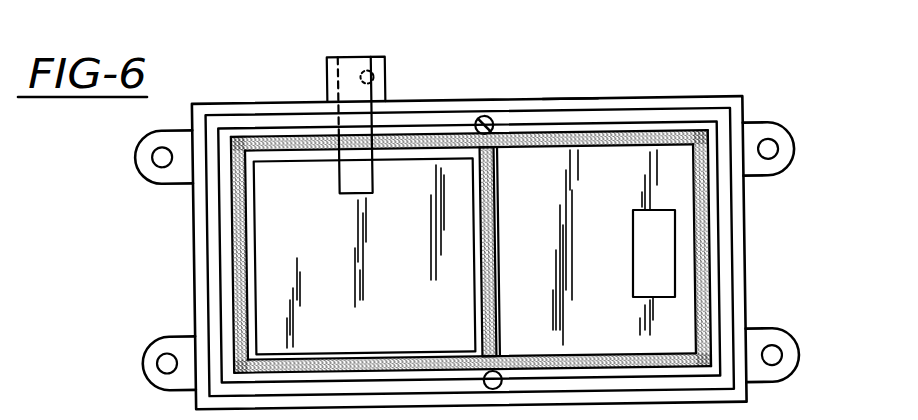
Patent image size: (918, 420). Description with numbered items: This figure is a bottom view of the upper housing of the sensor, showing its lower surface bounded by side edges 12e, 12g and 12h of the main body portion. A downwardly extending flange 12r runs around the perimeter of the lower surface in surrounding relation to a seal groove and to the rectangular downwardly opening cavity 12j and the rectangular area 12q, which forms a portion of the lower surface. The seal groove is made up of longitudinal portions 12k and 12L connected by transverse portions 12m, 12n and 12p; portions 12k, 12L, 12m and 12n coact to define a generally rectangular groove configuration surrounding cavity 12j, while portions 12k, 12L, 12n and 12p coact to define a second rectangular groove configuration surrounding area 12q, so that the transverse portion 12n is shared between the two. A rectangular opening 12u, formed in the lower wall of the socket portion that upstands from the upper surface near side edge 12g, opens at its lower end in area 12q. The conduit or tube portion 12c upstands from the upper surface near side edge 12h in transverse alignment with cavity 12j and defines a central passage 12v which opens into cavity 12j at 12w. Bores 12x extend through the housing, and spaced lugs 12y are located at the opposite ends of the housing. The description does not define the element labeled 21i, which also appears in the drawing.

The conduit or tube portion 12c is at (328, 81).
The side edge 12e is at (193, 263).
The side edge 12g is at (748, 216).
The side edge 12h is at (571, 98).
The rectangular downwardly opening cavity 12j is at (400, 160).
The longitudinal seal groove portion 12k is at (276, 147).
The longitudinal seal groove portion 12L is at (367, 357).
The transverse seal groove portion 12m is at (250, 289).
The transverse seal groove portion 12n is at (486, 297).
The transverse seal groove portion 12p is at (712, 278).
The rectangular area 12q is at (546, 230).
The downwardly extending flange 12r is at (247, 110).
The rectangular opening 12u is at (648, 294).
The central passage 12v is at (378, 65).
The passage opening 12w is at (360, 195).
The bore 12x is at (492, 116).
The lug 12y is at (143, 176).
The display panel 21i is at (599, 185).